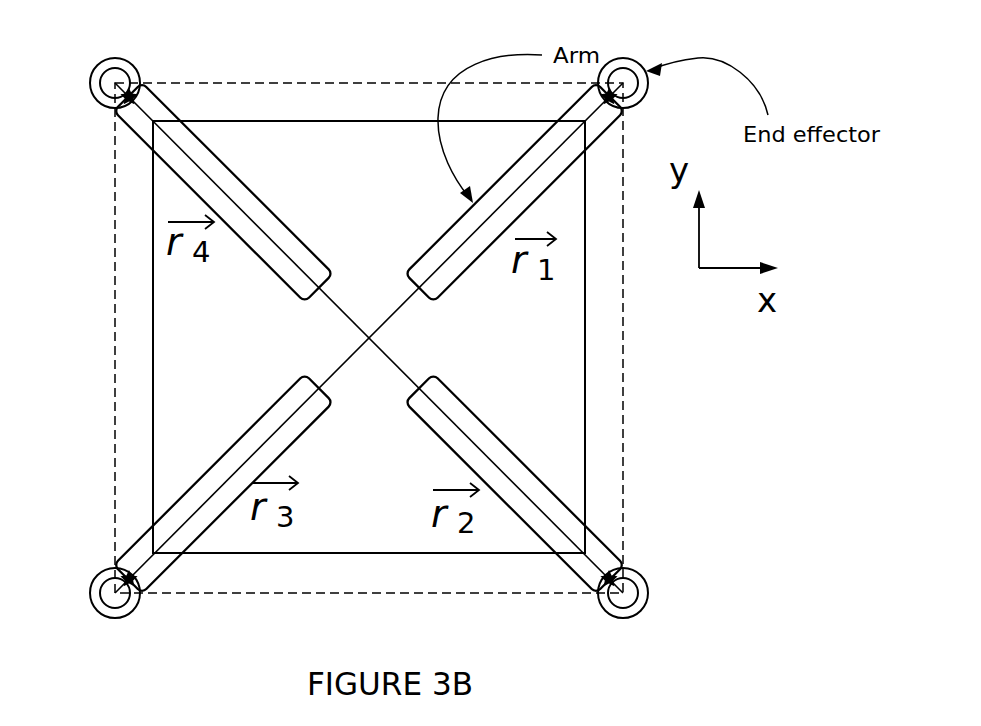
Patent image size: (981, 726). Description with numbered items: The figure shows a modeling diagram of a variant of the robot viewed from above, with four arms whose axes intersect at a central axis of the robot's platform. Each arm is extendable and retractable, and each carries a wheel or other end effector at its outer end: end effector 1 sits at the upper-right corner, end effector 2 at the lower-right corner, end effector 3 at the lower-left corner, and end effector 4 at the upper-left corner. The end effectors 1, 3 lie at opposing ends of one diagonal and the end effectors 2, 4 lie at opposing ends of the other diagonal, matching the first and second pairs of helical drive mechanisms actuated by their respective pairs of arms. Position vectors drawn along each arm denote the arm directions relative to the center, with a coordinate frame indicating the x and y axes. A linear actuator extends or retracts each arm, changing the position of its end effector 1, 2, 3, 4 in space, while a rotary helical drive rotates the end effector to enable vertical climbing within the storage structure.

The end effector 1 is at (642, 60).
The end effector 2 is at (642, 615).
The end effector 3 is at (98, 615).
The end effector 4 is at (94, 70).